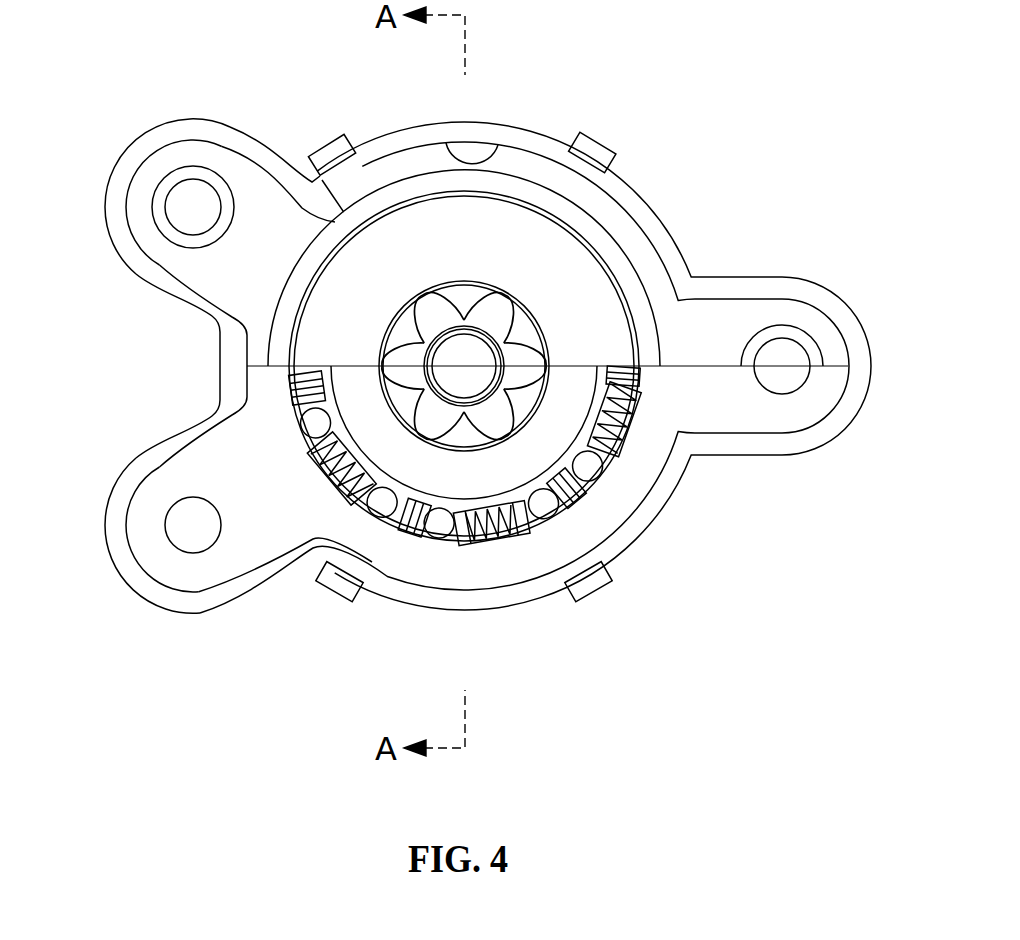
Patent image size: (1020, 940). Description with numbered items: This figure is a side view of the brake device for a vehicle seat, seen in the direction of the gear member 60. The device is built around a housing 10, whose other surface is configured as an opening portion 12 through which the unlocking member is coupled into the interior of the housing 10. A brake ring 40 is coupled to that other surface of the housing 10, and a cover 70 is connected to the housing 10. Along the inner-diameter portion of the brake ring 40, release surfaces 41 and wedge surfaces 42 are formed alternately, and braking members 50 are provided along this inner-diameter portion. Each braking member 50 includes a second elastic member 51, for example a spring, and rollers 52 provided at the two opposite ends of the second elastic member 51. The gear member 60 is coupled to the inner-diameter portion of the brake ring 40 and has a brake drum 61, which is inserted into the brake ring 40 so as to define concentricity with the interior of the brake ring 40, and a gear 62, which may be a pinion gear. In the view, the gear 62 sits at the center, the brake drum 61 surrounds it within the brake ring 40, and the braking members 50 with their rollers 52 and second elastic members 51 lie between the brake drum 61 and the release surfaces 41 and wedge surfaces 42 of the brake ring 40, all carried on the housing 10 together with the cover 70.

The housing 10 is at (648, 187).
The opening portion 12 is at (448, 157).
The brake ring 40 is at (662, 482).
The release surfaces 41 is at (300, 399).
The wedge surfaces 42 is at (412, 528).
The braking members 50 is at (545, 630).
The second elastic member 51 is at (491, 523).
The rollers 52 is at (491, 523).
The gear member 60 is at (368, 233).
The brake drum 61 is at (565, 400).
The gear 62 is at (413, 313).
The cover 70 is at (662, 254).